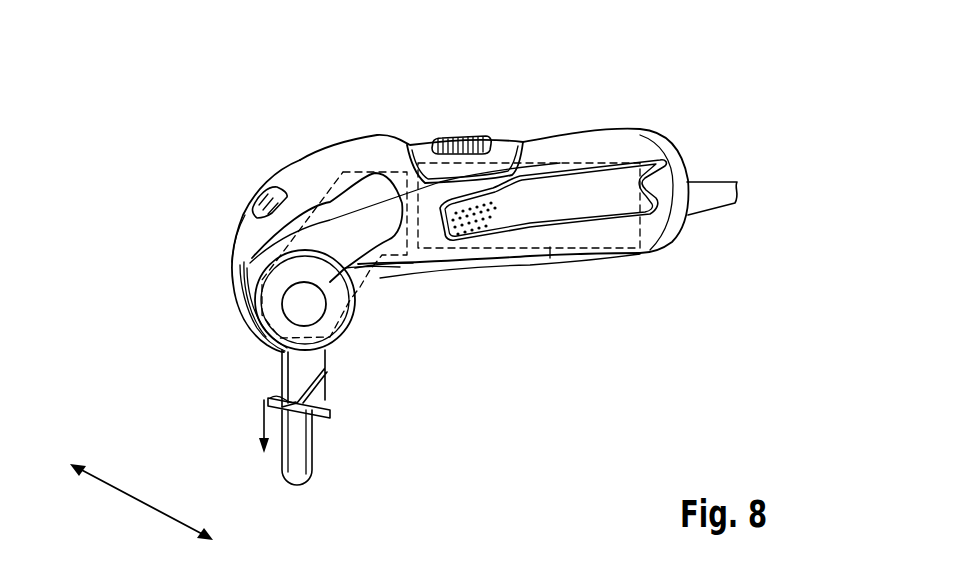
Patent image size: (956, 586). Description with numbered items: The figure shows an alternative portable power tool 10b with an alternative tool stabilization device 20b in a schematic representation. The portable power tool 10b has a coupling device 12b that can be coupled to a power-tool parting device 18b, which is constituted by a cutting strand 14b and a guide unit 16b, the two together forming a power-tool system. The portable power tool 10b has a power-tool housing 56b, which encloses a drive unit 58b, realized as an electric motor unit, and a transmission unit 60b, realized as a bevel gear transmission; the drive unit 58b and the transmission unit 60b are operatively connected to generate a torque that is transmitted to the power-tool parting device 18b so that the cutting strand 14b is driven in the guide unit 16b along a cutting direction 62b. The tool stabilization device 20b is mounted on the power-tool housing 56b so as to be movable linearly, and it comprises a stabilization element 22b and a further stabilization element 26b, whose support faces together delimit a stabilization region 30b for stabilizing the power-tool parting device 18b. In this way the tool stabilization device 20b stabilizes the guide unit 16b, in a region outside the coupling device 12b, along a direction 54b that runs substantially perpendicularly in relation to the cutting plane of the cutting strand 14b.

The portable power tool 10b is at (724, 80).
The coupling device 12b is at (212, 248).
The cutting strand 14b is at (262, 368).
The guide unit 16b is at (256, 345).
The power-tool parting device 18b is at (209, 361).
The tool stabilization device 20b is at (358, 348).
The stabilization element 22b is at (303, 410).
The further stabilization element 26b is at (274, 398).
The stabilization region 30b is at (204, 440).
The direction 54b is at (140, 503).
The power-tool housing 56b is at (599, 138).
The drive unit 58b is at (567, 269).
The transmission unit 60b is at (337, 178).
The cutting direction 62b is at (261, 418).